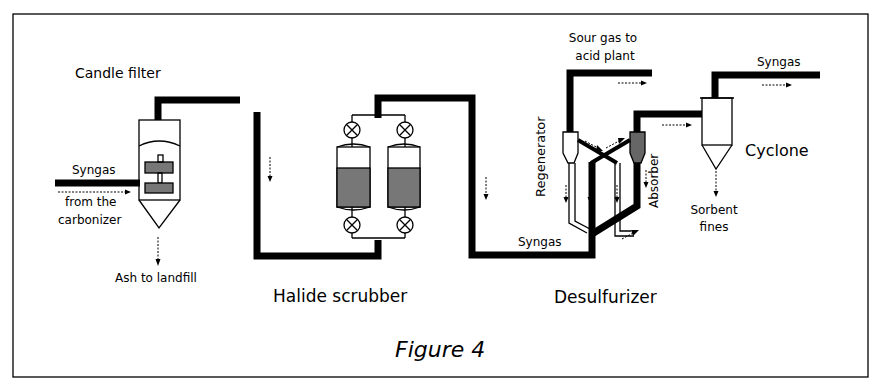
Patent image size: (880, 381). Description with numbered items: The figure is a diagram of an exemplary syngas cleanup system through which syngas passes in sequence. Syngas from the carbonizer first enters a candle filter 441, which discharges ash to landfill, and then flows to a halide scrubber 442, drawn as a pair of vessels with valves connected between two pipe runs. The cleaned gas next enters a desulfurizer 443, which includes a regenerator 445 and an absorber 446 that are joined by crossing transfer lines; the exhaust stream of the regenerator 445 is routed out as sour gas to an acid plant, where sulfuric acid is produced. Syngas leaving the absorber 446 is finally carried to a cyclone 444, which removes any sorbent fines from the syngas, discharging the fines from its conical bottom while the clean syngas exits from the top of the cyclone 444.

The candle filter 441 is at (139, 154).
The halide scrubber 442 is at (337, 167).
The desulfurizer 443 is at (603, 238).
The cyclone 444 is at (728, 135).
The regenerator 445 is at (561, 137).
The absorber 446 is at (638, 208).